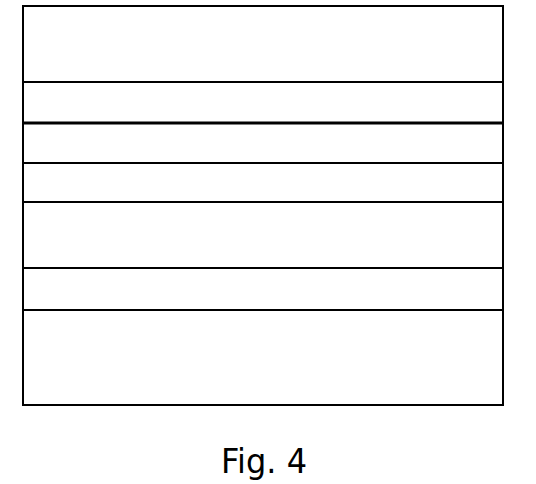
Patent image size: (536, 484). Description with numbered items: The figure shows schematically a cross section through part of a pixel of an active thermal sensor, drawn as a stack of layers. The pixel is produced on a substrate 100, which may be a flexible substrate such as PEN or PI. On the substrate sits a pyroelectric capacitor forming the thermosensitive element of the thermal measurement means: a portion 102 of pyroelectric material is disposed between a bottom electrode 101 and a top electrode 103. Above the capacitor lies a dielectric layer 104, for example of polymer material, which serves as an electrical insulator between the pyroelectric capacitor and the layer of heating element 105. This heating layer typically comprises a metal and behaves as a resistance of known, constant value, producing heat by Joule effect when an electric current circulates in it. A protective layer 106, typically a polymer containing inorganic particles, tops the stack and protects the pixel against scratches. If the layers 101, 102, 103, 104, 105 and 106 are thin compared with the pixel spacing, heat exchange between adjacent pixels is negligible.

The substrate 100 is at (283, 370).
The bottom electrode 101 is at (283, 303).
The portion made from pyroelectric material 102 is at (283, 250).
The top electrode 103 is at (283, 196).
The dielectric layer 104 is at (283, 158).
The layer of heating element 105 is at (283, 117).
The protective layer 106 is at (283, 57).